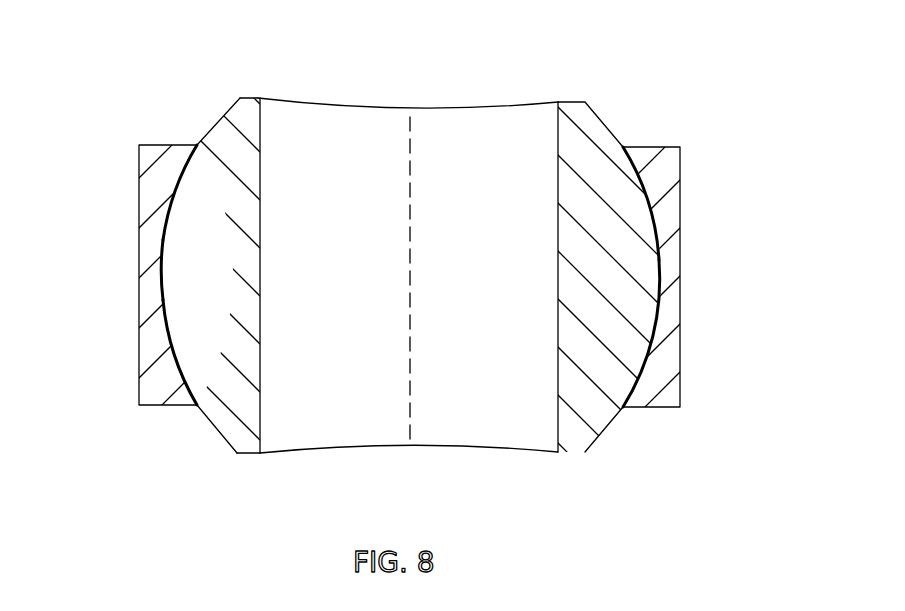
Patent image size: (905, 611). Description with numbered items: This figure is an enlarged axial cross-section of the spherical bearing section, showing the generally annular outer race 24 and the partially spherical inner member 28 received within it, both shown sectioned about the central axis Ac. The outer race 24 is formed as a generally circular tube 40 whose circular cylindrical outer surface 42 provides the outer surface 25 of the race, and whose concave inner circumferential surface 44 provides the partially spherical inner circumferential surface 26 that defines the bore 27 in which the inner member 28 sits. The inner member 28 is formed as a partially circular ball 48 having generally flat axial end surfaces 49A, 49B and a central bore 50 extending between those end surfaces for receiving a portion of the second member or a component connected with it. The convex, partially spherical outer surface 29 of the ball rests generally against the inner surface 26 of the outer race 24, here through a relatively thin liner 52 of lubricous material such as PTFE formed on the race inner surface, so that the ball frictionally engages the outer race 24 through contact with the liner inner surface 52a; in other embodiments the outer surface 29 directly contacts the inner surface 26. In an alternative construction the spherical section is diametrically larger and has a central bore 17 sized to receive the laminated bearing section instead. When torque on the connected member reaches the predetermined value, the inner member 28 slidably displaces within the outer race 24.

The central bore 17 is at (262, 427).
The outer race 24 is at (686, 240).
The outer surface 25 is at (147, 287).
The inner circumferential surface 26 is at (652, 306).
The bore 27 is at (639, 217).
The inner member 28 is at (440, 305).
The outer surface 29 is at (210, 426).
The circular tube 40 is at (149, 287).
The cylindrical outer surface 42 is at (138, 294).
The concave inner circumferential surface 44 is at (175, 338).
The partially circular ball 48 is at (605, 410).
The axial end surface 49A is at (247, 96).
The axial end surface 49B is at (248, 458).
The central bore 50 is at (503, 430).
The liner 52 is at (241, 275).
The liner inner surface 52a is at (184, 180).
The central axis Ac is at (413, 148).